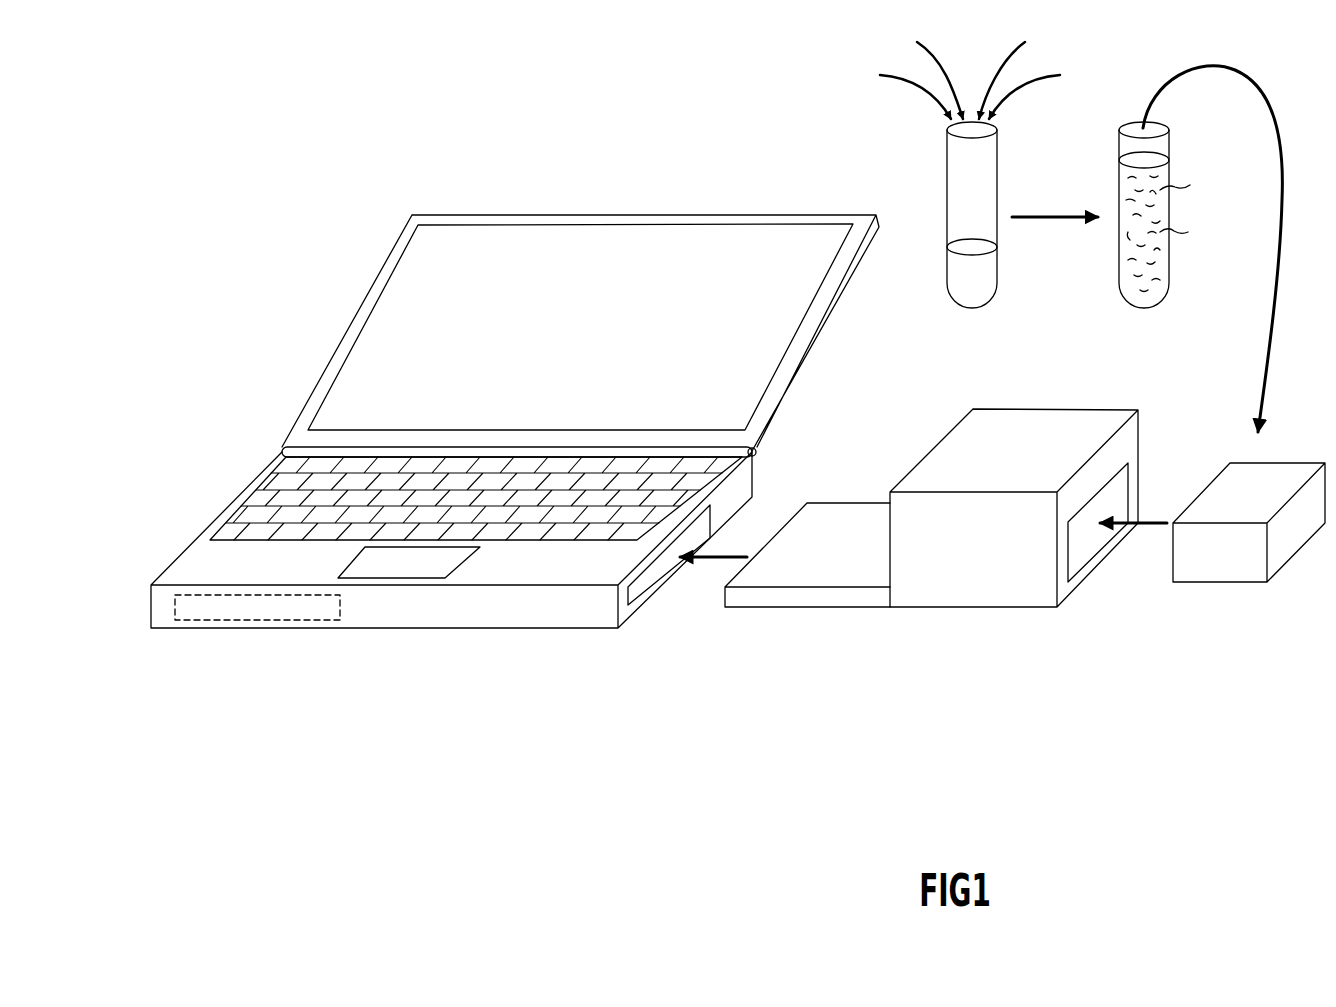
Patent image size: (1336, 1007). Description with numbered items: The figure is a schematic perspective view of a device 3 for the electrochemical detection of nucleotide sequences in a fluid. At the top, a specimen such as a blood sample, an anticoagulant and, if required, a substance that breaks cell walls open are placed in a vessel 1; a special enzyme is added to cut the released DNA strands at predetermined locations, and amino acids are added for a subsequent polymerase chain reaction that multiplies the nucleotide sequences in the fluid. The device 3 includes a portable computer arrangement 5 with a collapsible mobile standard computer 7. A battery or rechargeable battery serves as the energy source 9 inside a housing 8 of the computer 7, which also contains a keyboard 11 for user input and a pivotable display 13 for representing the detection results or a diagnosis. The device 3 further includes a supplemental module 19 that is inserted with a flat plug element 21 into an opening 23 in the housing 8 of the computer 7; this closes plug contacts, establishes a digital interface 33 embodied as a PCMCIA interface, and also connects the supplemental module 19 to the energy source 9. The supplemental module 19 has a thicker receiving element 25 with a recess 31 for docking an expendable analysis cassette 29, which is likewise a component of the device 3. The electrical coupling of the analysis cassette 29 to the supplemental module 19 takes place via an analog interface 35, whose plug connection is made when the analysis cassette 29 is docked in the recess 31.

The vessel 1 is at (997, 280).
The device 3 is at (726, 537).
The portable computer arrangement 5 is at (654, 505).
The collapsible mobile standard computer 7 is at (522, 472).
The housing 8 is at (183, 567).
The energy source 9 is at (263, 608).
The keyboard 11 is at (288, 507).
The pivotable display 13 is at (405, 318).
The supplemental module 19 is at (948, 544).
The flat plug element 21 is at (822, 523).
The opening 23 is at (769, 519).
The receiving element 25 is at (1012, 440).
The analysis cassette 29 is at (1240, 545).
The recess 31 is at (1107, 492).
The digital interface 33 is at (692, 535).
The analog interface 35 is at (1187, 483).